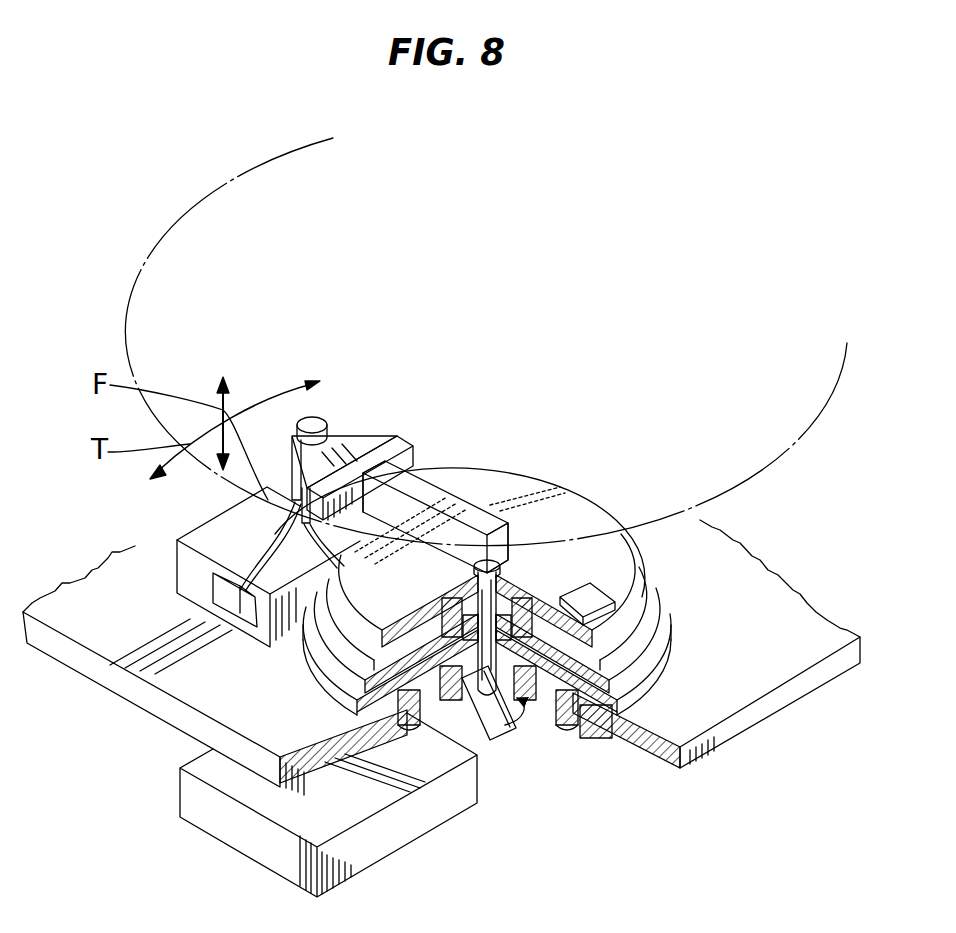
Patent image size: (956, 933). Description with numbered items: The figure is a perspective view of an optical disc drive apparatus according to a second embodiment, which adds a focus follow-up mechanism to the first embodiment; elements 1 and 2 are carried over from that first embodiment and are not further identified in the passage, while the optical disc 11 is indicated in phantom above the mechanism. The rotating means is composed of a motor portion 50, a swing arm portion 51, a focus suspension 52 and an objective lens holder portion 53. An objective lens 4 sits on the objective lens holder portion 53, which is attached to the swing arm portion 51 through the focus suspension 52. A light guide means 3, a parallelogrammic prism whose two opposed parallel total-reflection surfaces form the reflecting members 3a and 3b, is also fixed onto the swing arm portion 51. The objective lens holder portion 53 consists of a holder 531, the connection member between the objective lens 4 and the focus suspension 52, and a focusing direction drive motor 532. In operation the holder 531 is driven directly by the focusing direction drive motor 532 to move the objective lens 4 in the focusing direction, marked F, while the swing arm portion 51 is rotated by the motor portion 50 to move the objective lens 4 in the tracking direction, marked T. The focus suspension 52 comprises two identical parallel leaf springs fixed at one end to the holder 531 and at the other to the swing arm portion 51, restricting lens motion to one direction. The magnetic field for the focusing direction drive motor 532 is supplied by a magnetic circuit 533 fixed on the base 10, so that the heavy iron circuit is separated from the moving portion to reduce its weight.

The base block 1 is at (437, 808).
The magnet block 2 is at (483, 712).
The light guide means 3 is at (460, 496).
The reflecting member 3a is at (496, 545).
The reflecting member 3b is at (400, 441).
The objective lens 4 is at (320, 415).
The base 10 is at (725, 733).
The disk 11 is at (770, 453).
The motor portion 50 is at (645, 693).
The swing arm portion 51 is at (620, 568).
The focus suspension 52 is at (367, 441).
The objective lens holder portion 53 is at (350, 433).
The holder 531 is at (292, 440).
The focusing direction drive motor 532 is at (298, 500).
The magnetic circuit 533 is at (210, 548).